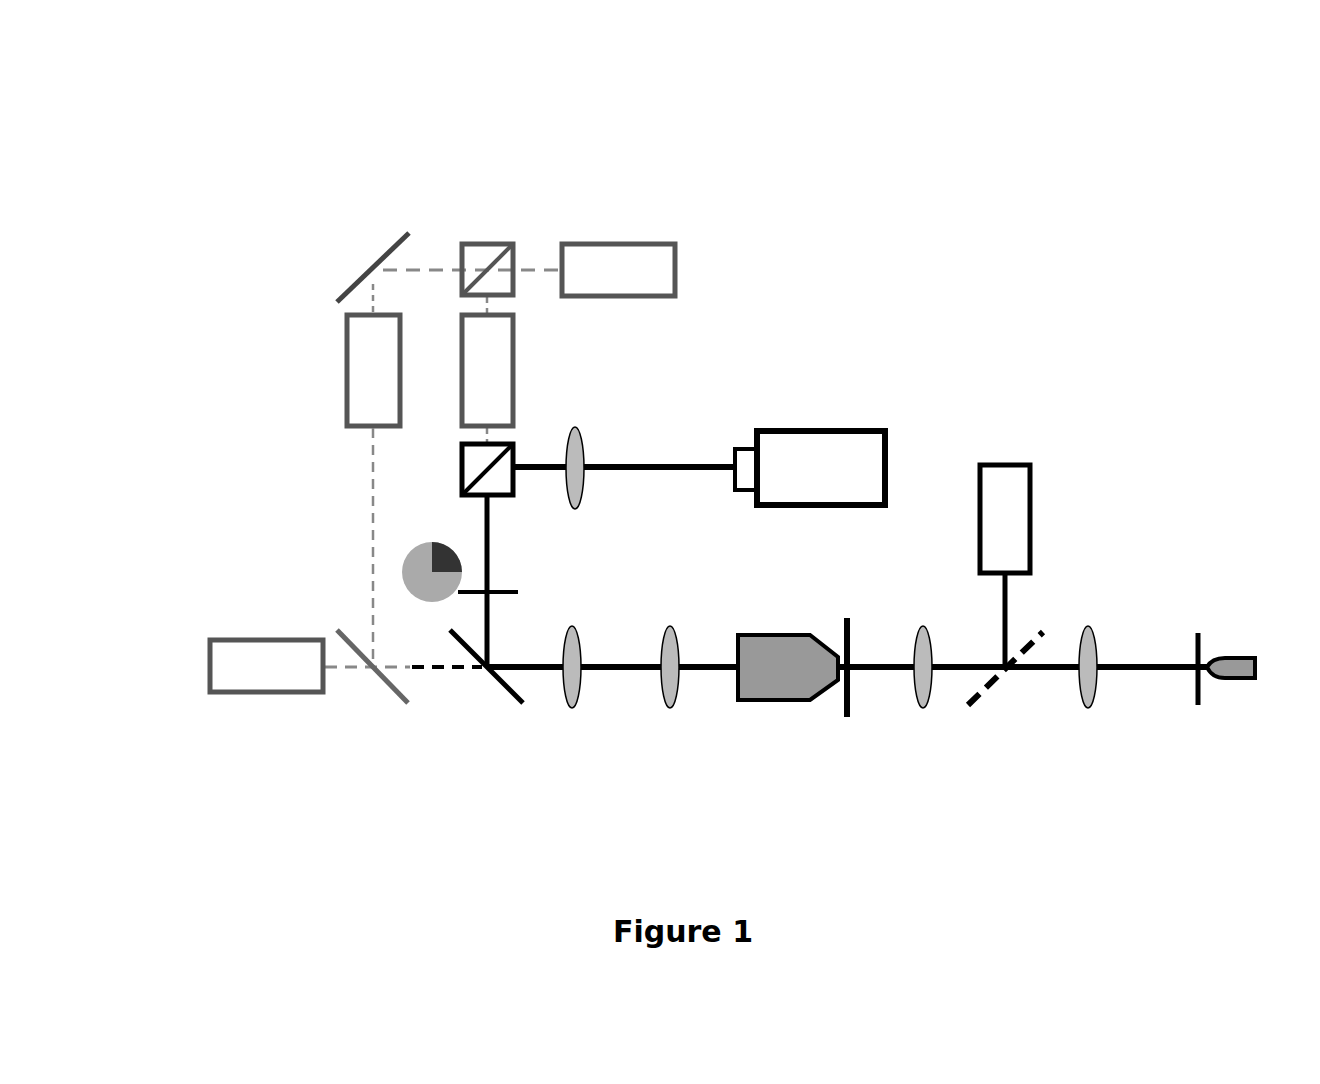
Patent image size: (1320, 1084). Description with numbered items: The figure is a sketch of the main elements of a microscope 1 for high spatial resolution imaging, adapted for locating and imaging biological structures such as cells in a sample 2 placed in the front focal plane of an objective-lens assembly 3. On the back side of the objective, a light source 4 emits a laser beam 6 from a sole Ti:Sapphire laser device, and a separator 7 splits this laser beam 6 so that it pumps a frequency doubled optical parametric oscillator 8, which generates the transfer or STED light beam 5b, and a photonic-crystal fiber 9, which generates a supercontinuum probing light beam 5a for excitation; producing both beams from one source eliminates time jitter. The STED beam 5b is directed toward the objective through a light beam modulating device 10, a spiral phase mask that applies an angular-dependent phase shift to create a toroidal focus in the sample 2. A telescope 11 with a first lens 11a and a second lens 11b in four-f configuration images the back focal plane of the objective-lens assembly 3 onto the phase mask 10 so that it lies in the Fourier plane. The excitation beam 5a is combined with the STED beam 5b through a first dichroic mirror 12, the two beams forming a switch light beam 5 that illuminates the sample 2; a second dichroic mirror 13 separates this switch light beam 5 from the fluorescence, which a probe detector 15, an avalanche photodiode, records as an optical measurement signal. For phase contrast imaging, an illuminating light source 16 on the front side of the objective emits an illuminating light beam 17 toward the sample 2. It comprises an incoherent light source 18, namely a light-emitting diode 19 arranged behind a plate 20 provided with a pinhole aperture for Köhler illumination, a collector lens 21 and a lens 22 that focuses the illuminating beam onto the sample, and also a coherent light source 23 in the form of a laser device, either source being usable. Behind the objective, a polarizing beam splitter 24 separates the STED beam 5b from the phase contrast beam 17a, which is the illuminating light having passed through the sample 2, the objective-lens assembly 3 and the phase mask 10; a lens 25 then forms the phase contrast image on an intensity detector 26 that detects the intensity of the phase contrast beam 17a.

The microscope 1 is at (1022, 338).
The sample 2 is at (850, 640).
The objective-lens assembly 3 is at (763, 645).
The light source 4 is at (622, 243).
The switch light beam 5 is at (633, 665).
The probing light beam 5a is at (378, 495).
The transfer light beam 5b is at (487, 437).
The laser beam 6 is at (548, 265).
The separator 7 is at (473, 242).
The frequency doubled OPO 8 is at (517, 368).
The photonic-crystal fiber 9 is at (347, 370).
The light beam modulating device 10 is at (397, 568).
The telescope 11 is at (613, 748).
The first lens 11a is at (678, 692).
The second lens 11b is at (582, 698).
The first dichroic mirror 12 is at (463, 645).
The second dichroic mirror 13 is at (357, 645).
The probe detector 15 is at (237, 643).
The illuminating light source 16 is at (1150, 475).
The illuminating light beam 17 is at (880, 665).
The phase contrast beam 17a is at (655, 465).
The incoherent light source 18 is at (1246, 614).
The light-emitting diode 19 is at (1248, 660).
The plate 20 is at (1193, 652).
The lens 21 is at (1097, 678).
The lens 22 is at (925, 700).
The coherent light source 23 is at (1032, 485).
The polarizing beam splitter 24 is at (515, 478).
The lens 25 is at (582, 488).
The intensity detector 26 is at (835, 428).